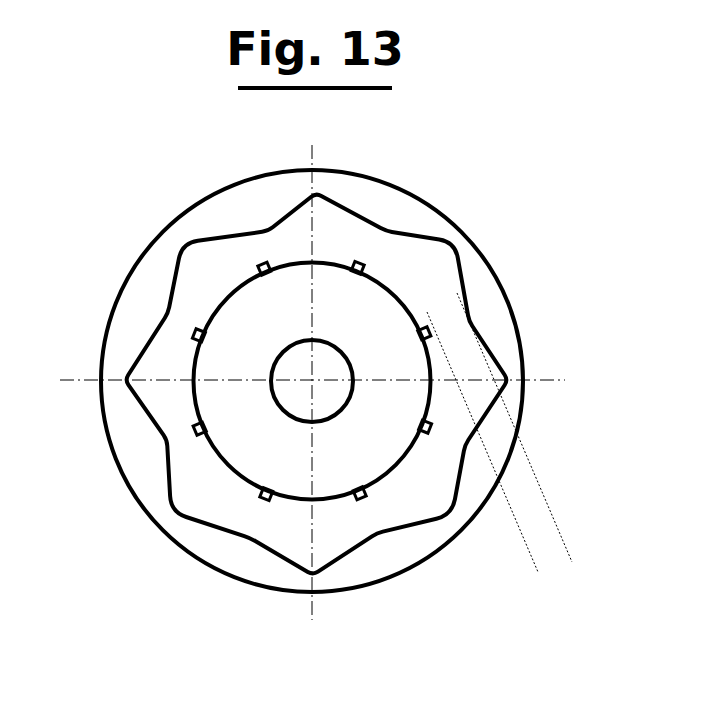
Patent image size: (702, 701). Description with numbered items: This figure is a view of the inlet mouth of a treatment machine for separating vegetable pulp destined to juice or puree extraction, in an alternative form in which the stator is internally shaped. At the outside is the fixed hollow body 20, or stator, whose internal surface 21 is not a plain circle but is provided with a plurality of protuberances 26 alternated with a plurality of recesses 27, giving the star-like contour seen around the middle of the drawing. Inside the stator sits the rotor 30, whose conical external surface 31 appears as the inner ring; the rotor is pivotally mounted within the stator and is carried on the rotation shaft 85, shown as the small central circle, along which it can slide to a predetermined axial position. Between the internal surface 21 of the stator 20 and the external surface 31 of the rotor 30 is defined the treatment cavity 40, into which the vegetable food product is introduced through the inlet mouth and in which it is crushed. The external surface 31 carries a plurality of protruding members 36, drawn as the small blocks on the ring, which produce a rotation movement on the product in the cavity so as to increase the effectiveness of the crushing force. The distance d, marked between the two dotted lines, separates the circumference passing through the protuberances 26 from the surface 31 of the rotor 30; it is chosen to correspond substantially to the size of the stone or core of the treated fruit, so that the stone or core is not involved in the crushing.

The fixed hollow body 20 is at (500, 263).
The internal surface 21 is at (191, 292).
The protuberances 26 is at (458, 316).
The recesses 27 is at (304, 220).
The rotor 30 is at (215, 460).
The external surface 31 is at (327, 262).
The protruding members 36 is at (283, 503).
The treatment cavity 40 is at (167, 352).
The rotation shaft 85 is at (303, 397).
The distance d is at (563, 545).